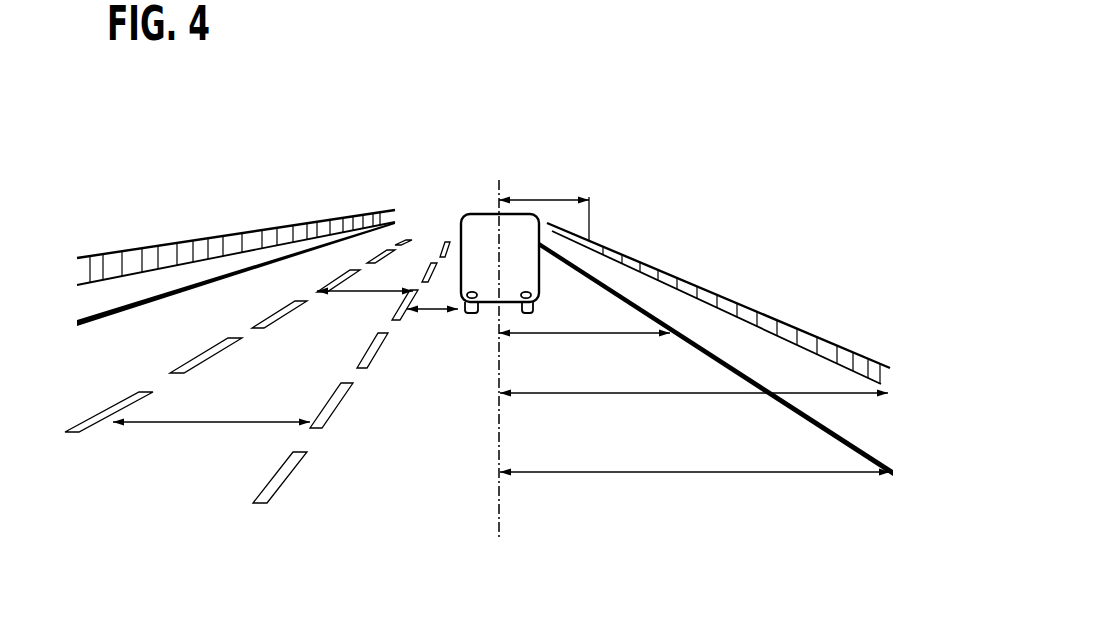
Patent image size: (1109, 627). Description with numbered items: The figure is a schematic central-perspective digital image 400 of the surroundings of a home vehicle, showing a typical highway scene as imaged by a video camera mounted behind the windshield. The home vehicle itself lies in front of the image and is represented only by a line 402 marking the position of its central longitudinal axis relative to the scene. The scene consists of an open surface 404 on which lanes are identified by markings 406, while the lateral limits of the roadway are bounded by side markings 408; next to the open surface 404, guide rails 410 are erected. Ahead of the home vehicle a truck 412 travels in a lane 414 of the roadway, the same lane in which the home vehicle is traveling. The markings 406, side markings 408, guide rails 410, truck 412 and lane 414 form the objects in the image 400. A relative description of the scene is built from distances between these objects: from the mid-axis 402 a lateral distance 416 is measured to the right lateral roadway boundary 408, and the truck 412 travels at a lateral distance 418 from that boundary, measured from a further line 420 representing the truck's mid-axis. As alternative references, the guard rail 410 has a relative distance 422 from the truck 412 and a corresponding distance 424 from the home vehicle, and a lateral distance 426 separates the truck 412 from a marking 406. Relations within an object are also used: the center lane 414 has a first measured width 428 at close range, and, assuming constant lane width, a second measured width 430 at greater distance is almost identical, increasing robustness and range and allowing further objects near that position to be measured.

The central-perspective digital image 400 is at (342, 168).
The line representing central longitudinal axis of home vehicle 402 is at (498, 518).
The open surface 404 is at (362, 492).
The markings 406 is at (265, 501).
The side markings 408 is at (107, 322).
The guide rails 410 is at (117, 265).
The truck 412 is at (484, 227).
The lane 414 is at (232, 391).
The lateral distance 416 is at (770, 477).
The lateral distance 418 is at (593, 334).
The further line 420 is at (499, 181).
The relative distance 422 is at (547, 198).
The distance 424 is at (663, 395).
The lateral distance 426 is at (430, 311).
The first measured width 428 is at (175, 423).
The second measured width 430 is at (358, 292).